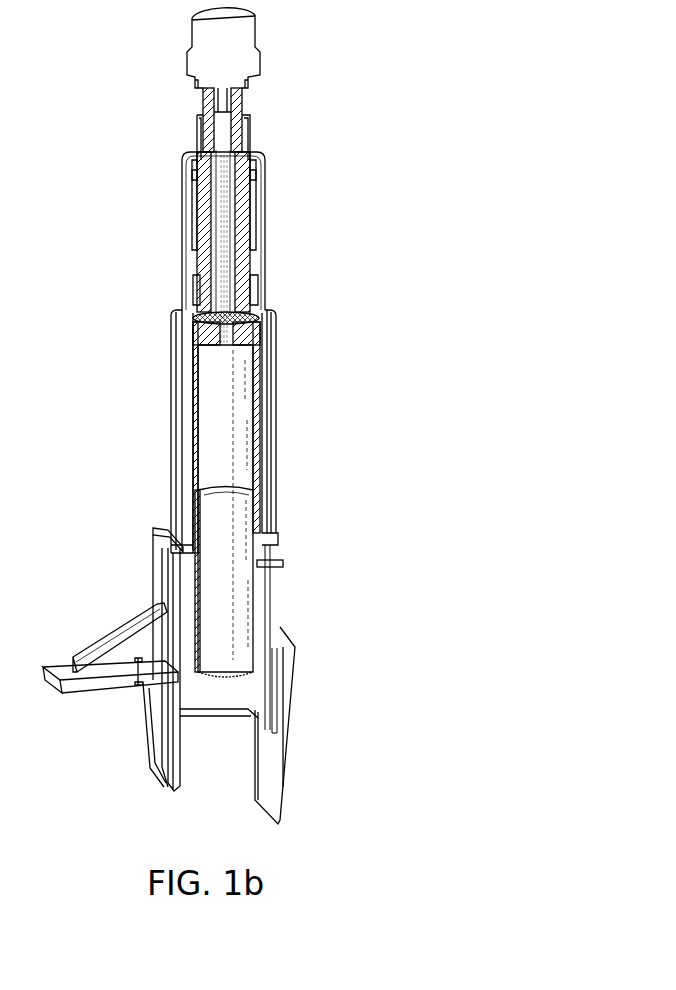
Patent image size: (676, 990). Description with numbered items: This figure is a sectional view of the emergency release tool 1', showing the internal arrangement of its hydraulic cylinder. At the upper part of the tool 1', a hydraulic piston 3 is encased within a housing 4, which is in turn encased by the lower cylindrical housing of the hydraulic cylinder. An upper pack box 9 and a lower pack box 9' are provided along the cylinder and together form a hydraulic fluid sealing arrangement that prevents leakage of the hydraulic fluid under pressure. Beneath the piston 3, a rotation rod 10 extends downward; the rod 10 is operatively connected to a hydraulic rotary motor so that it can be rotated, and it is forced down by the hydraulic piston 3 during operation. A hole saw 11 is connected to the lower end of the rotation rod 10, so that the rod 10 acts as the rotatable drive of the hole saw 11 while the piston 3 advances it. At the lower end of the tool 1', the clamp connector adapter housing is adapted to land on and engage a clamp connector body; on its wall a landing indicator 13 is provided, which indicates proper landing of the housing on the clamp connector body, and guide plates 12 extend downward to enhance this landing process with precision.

The emergency release tool 1' is at (383, 219).
The hydraulic piston 3 is at (245, 140).
The housing 4 is at (260, 215).
The upper pack box 9 is at (269, 170).
The lower pack box 9' is at (113, 605).
The rotation rod 10 is at (222, 313).
The hole saw 11 is at (228, 625).
The guide plates 12 is at (177, 752).
The landing indicator 13 is at (133, 670).